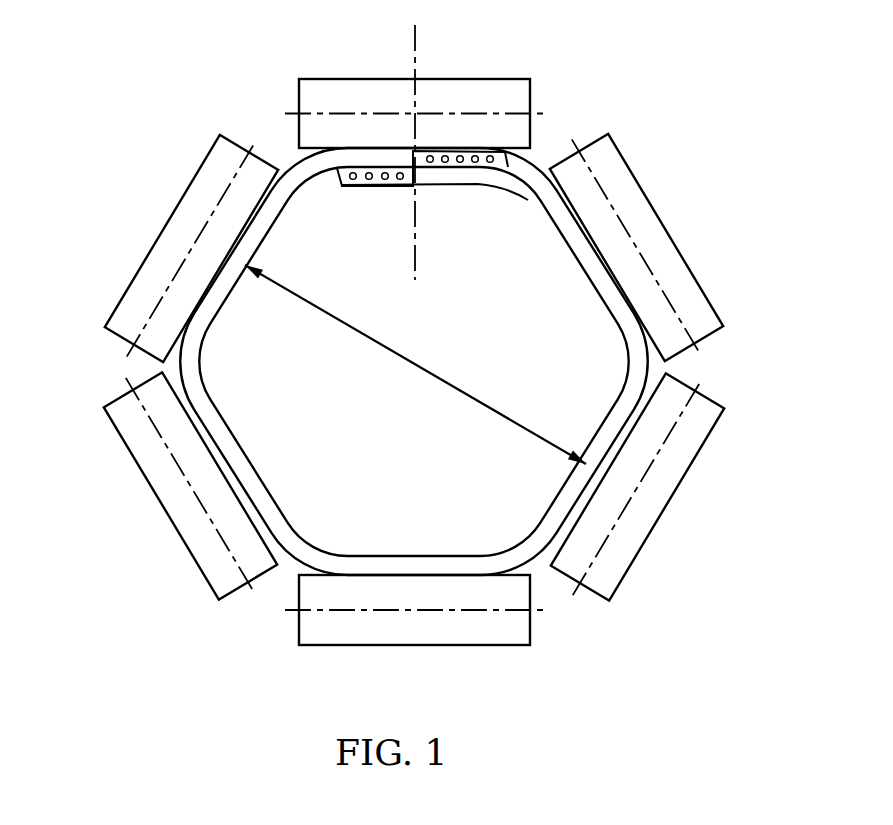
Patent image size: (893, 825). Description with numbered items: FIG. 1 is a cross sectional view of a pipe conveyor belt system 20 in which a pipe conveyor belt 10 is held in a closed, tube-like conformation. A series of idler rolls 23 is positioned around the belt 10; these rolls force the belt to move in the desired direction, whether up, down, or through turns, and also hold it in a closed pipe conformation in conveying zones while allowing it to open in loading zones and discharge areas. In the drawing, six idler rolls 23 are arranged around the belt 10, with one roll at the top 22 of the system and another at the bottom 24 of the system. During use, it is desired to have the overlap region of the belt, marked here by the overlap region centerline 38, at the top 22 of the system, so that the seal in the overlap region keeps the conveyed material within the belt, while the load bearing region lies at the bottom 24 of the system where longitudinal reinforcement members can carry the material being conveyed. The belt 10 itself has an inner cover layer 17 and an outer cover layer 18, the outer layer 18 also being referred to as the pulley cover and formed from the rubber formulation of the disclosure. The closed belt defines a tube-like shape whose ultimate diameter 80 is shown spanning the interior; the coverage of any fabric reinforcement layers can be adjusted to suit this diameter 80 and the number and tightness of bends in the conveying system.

The pipe conveyor belt system 20 is at (110, 198).
The pipe conveyor belt 10 is at (165, 368).
The inner cover layer 17 is at (587, 272).
The outer cover layer 18 is at (650, 362).
The top of the system 22 is at (390, 148).
The idler rolls 23 is at (518, 93).
The bottom of the system 24 is at (423, 575).
The overlap region centerline 38 is at (413, 45).
The diameter of the tube-like shape 80 is at (405, 366).